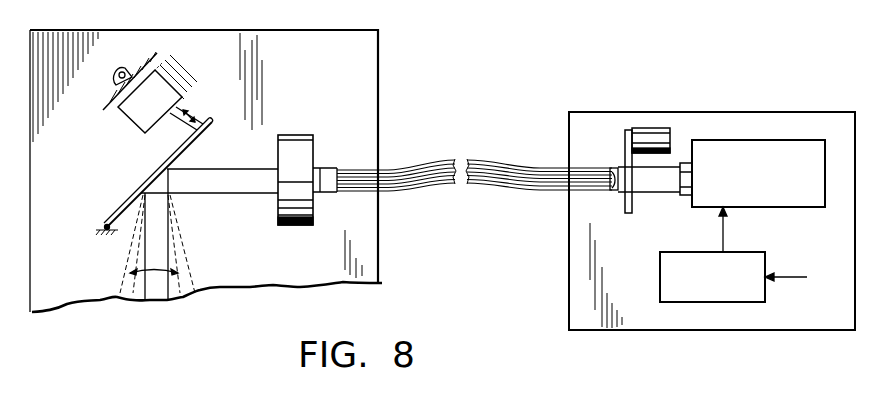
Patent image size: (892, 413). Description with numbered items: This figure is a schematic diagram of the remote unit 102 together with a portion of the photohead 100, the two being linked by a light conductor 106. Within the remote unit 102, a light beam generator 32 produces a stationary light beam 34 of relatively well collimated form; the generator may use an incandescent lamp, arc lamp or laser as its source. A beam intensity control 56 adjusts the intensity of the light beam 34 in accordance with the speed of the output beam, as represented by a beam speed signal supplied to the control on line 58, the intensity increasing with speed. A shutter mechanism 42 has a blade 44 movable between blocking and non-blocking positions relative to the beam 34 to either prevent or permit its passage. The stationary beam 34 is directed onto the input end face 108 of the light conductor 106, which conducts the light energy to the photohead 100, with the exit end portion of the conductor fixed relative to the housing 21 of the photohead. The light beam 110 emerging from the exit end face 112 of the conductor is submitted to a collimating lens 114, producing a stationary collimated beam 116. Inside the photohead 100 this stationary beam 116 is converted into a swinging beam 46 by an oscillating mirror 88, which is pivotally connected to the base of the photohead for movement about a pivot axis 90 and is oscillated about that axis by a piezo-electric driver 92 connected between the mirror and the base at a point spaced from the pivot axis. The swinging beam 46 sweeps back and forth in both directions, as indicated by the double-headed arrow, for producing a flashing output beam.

The photohead 100 is at (275, 28).
The housing 21 is at (335, 28).
The piezo-electric driver 92 is at (167, 78).
The oscillating mirror 88 is at (150, 173).
The pivot axis 90 is at (103, 231).
The stationary collimated beam 116 is at (267, 194).
The swinging beam 46 is at (168, 237).
The collimating lens 114 is at (300, 134).
The light beam 110 is at (322, 167).
The exit end face 112 is at (318, 180).
The light conductor 106 is at (550, 163).
The remote unit 102 is at (750, 112).
The blade 44 is at (623, 152).
The shutter mechanism 42 is at (640, 130).
The input end face 108 is at (618, 178).
The stationary light beam 34 is at (650, 193).
The light beam generator 32 is at (772, 140).
The beam intensity control 56 is at (755, 252).
The line 58 is at (787, 277).